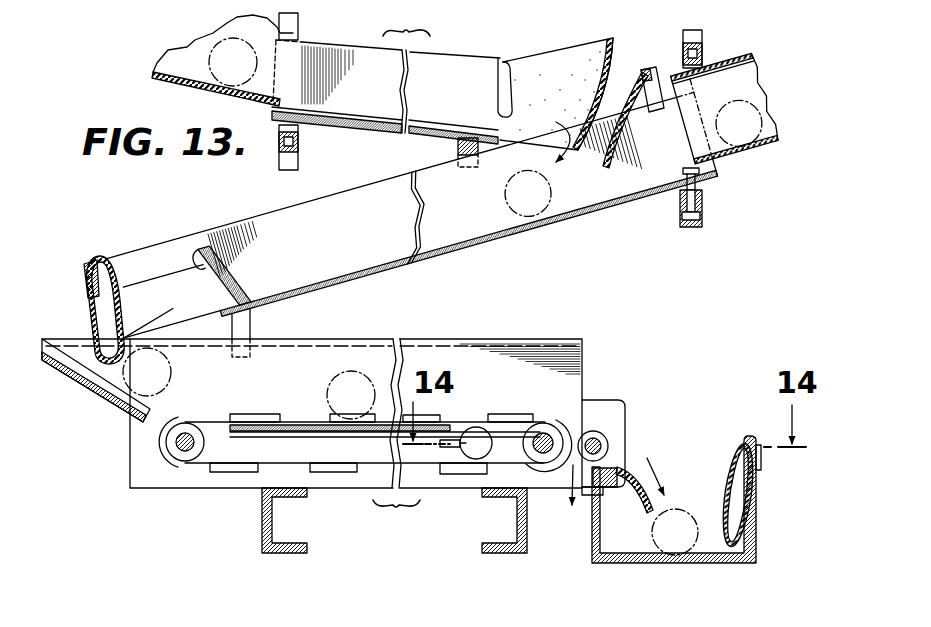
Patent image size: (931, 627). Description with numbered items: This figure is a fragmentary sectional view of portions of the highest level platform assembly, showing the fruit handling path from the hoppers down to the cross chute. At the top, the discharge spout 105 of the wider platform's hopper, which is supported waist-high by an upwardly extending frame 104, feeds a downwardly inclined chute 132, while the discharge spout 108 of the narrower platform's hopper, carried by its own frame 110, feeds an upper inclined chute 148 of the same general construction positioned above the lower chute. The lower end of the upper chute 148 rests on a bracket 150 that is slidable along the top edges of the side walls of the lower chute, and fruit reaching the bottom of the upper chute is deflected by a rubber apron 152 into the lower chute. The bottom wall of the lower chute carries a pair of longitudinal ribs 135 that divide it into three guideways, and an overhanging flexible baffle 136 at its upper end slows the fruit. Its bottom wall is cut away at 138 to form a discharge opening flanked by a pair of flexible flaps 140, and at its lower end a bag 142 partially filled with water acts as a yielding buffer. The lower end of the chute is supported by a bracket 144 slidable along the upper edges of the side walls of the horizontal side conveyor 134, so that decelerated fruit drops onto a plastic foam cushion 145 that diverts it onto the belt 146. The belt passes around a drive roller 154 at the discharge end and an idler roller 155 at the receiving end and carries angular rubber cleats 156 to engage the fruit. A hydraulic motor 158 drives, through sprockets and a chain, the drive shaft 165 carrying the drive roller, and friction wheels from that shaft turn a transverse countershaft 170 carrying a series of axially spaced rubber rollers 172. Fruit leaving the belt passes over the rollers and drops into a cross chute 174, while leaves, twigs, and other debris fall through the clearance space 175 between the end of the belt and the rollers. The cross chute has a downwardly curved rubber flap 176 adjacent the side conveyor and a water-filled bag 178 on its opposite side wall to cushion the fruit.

The frame 104 is at (702, 218).
The discharge spout 105 is at (727, 56).
The discharge spout 108 is at (294, 34).
The frame 110 is at (278, 143).
The inclined chute 132 is at (522, 233).
The side conveyor 134 is at (366, 337).
The longitudinal ribs 135 is at (430, 120).
The flexible baffle 136 is at (633, 80).
The cut-away opening 138 is at (202, 254).
The flexible flaps 140 is at (158, 290).
The bag 142 is at (93, 308).
The bracket 144 is at (252, 324).
The plastic foam cushion 145 is at (80, 367).
The belt 146 is at (214, 421).
The inclined chute 148 is at (460, 48).
The bracket 150 is at (457, 151).
The rubber apron 152 is at (580, 62).
The drive roller 154 is at (539, 426).
The idler roller 155 is at (179, 456).
The rubber cleats 156 is at (267, 412).
The hydraulic motor 158 is at (477, 428).
The drive shaft 165 is at (536, 450).
The transverse countershaft 170 is at (602, 447).
The rubber rollers 172 is at (597, 442).
The cross chute 174 is at (708, 563).
The clearance space 175 is at (583, 428).
The rubber flap 176 is at (643, 502).
The water-filled bag 178 is at (730, 477).